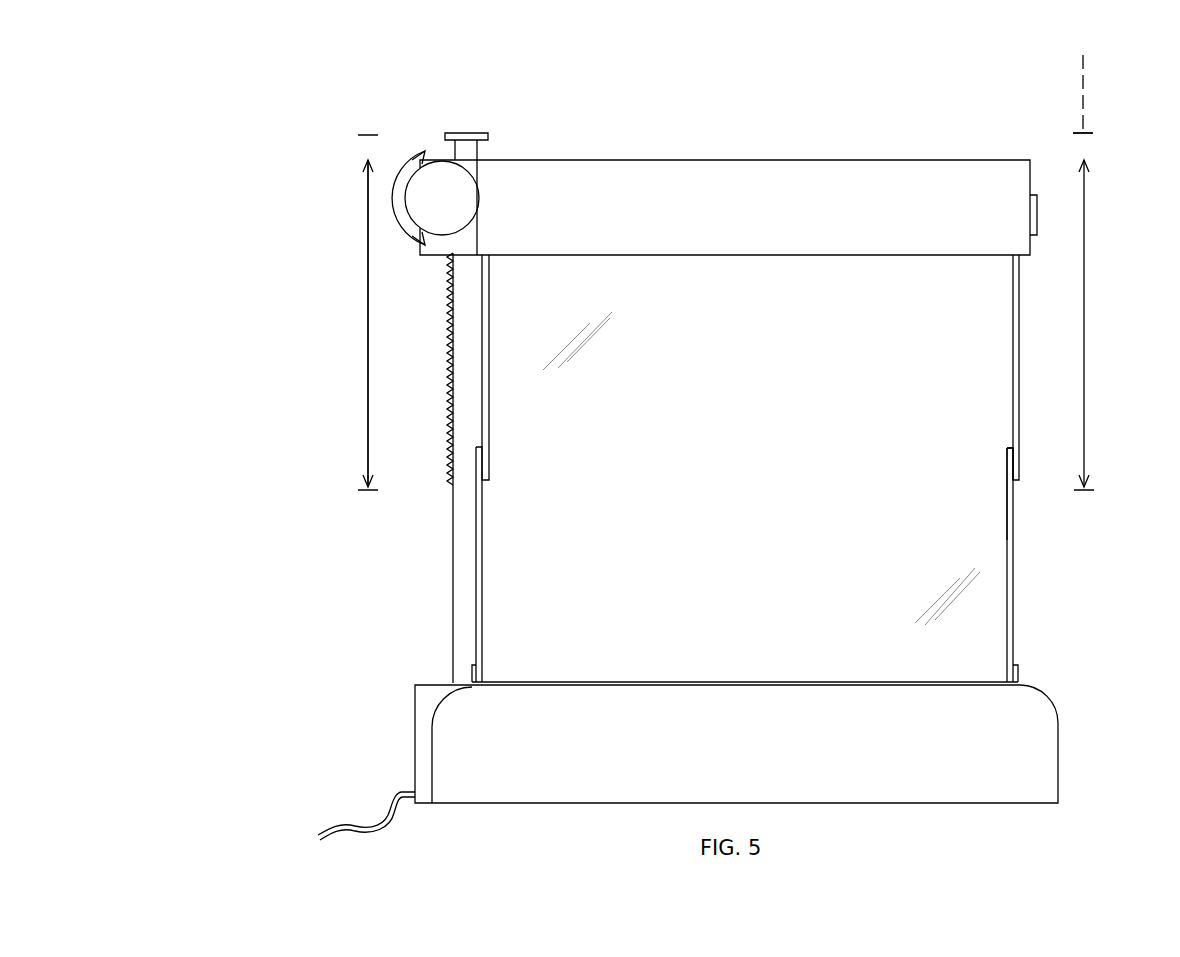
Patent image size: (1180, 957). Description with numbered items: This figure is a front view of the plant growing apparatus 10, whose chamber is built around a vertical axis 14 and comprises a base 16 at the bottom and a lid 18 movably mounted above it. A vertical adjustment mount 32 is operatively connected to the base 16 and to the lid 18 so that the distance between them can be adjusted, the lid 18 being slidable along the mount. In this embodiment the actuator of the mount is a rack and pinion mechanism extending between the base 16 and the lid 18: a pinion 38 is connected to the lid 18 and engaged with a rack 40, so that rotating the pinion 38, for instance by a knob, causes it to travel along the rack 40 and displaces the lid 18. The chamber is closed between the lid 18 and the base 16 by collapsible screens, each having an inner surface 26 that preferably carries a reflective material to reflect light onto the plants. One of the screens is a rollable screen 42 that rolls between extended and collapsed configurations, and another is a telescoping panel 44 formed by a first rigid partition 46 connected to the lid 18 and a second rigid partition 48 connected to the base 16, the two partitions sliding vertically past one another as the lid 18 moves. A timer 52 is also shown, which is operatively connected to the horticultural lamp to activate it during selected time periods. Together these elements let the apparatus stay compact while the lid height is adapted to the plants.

The plant growing apparatus 10 is at (262, 256).
The vertical axis 14 is at (1085, 72).
The base 16 is at (1040, 762).
The lid 18 is at (950, 175).
The inner surface 26 is at (482, 574).
The vertical adjustment mount 32 is at (343, 152).
The pinion 38 is at (432, 178).
The rack 40 is at (452, 502).
The rollable screen 42 is at (970, 340).
The telescoping panel 44 is at (1019, 465).
The first rigid partition 46 is at (1019, 398).
The second rigid partition 48 is at (1013, 610).
The timer 52 is at (1037, 215).